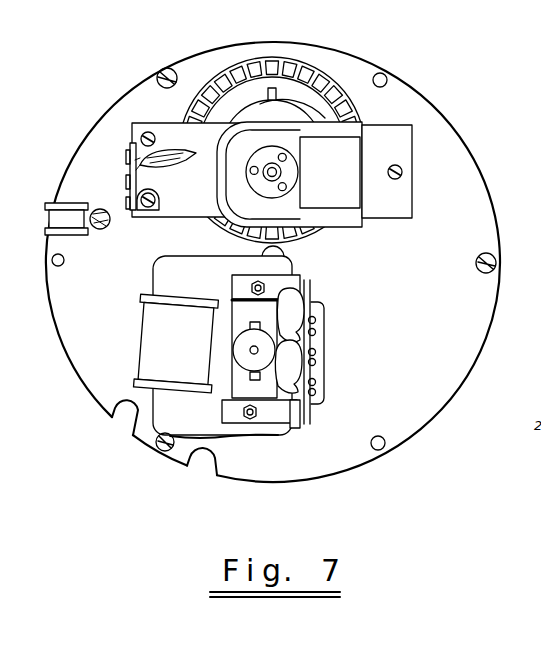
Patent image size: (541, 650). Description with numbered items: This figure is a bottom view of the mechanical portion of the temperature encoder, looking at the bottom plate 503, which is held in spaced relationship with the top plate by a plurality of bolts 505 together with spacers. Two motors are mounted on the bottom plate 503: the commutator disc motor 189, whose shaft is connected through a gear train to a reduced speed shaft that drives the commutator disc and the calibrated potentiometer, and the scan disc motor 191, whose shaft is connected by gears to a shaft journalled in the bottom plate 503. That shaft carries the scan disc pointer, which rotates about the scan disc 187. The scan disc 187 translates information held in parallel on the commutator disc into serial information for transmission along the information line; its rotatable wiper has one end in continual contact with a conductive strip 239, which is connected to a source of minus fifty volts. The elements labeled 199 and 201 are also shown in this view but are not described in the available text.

The scan disc 187 is at (318, 66).
The conductive strip 239 is at (285, 96).
The scan disc motor 191 is at (330, 227).
The commutator disc motor 189 is at (273, 437).
The contact 199 is at (294, 311).
The bracket 201 is at (288, 396).
The bottom plate 503 is at (437, 419).
The bolts 505 is at (164, 68).